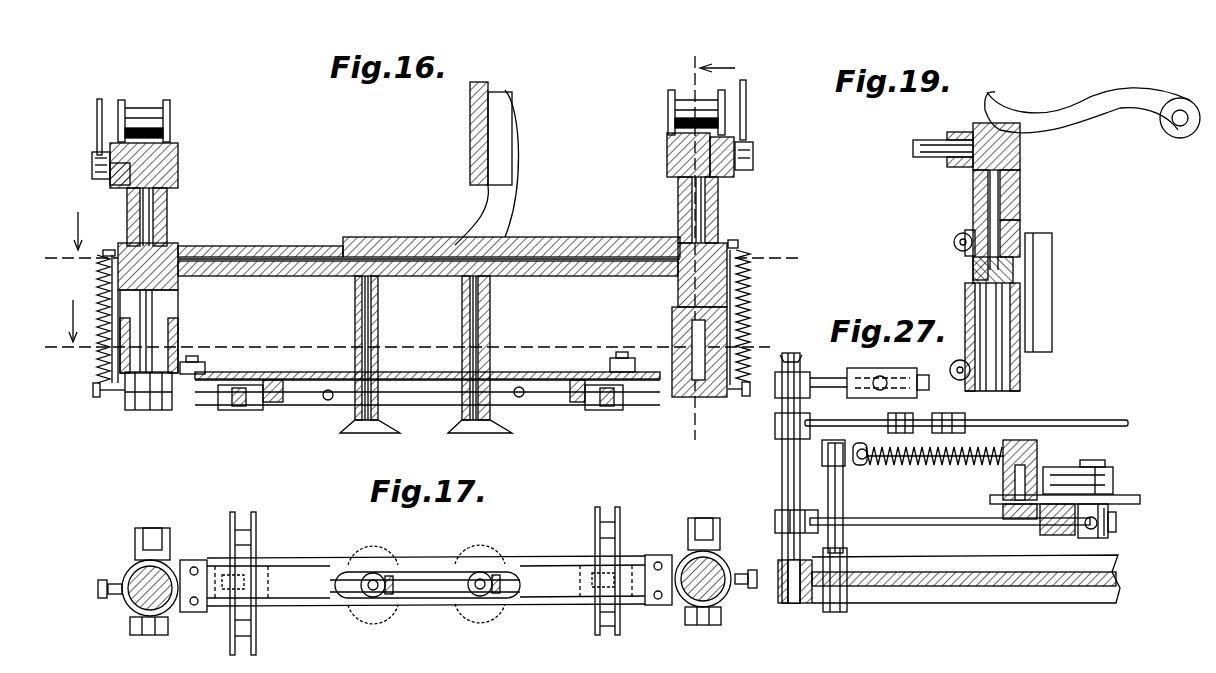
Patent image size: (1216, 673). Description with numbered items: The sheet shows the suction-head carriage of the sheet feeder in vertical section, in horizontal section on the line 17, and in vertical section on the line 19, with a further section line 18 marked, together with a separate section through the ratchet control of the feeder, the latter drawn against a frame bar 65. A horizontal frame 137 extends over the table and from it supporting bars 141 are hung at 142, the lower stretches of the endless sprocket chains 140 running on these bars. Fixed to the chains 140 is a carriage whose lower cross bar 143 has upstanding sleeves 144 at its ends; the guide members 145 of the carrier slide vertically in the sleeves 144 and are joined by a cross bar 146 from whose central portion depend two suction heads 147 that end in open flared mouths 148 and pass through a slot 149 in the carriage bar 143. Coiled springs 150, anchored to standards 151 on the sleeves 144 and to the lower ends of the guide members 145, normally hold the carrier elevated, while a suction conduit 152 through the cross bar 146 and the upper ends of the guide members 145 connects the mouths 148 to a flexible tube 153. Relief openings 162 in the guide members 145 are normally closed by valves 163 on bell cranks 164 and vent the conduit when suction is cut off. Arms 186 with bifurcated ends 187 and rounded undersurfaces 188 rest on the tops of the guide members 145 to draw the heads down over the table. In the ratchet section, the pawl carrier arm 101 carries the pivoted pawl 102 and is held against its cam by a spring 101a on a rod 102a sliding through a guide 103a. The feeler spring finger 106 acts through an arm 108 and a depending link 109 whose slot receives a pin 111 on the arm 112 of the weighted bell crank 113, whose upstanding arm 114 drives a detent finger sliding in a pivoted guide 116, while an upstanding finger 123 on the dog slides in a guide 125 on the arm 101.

In FIG. 16, the section line 17— 17 is at (417, 328).
In FIG. 16, the section line 18— 18 is at (418, 239).
In FIG. 16, the section line 19— 19 is at (710, 250).
In FIG. 27, the frame bar 65 is at (1108, 590).
In FIG. 27, the pawl carrier arm 101 is at (1112, 516).
In FIG. 27, the spring 101a is at (935, 466).
In FIG. 27, the pivoted pawl 102 is at (1112, 484).
In FIG. 27, the rod 102a is at (856, 466).
In FIG. 27, the guide 103a is at (1037, 446).
In FIG. 27, the feeler spring finger 106 is at (1045, 534).
In FIG. 27, the arm 108 is at (1066, 412).
In FIG. 27, the depending link 109 is at (927, 418).
In FIG. 27, the pin 111 is at (945, 428).
In FIG. 27, the arm of bell crank 112 is at (866, 408).
In FIG. 27, the weighted bell crank 113 is at (808, 514).
In FIG. 27, the upstanding arm 114 is at (780, 520).
In FIG. 27, the pivoted guide 116 is at (912, 528).
In FIG. 27, the upstanding finger 123 is at (1100, 538).
In FIG. 27, the guide 125 is at (1110, 526).
In FIG. 16, the horizontal frame 137 is at (470, 122).
In FIG. 16, the endless sprocket chains 140 is at (240, 386).
In FIG. 17, the endless sprocket chains 140 is at (256, 532).
In FIG. 16, the supporting bars 141 is at (238, 404).
In FIG. 16, the hangers 142 is at (468, 233).
In FIG. 16, the lower cross bar 143 is at (282, 370).
In FIG. 17, the lower cross bar 143 is at (308, 568).
In FIG. 16, the upstanding sleeves 144 is at (178, 332).
In FIG. 17, the upstanding sleeves 144 is at (170, 560).
In FIG. 19, the upstanding sleeves 144 is at (1052, 318).
In FIG. 16, the guide members 145 is at (180, 158).
In FIG. 17, the guide members 145 is at (175, 626).
In FIG. 19, the guide members 145 is at (1020, 156).
In FIG. 16, the cross bar 146 is at (552, 262).
In FIG. 19, the cross bar 146 is at (1020, 224).
In FIG. 16, the suction heads 147 is at (465, 310).
In FIG. 17, the suction heads 147 is at (366, 600).
In FIG. 16, the flared mouths 148 is at (356, 432).
In FIG. 17, the flared mouths 148 is at (456, 578).
In FIG. 16, the slot 149 is at (421, 370).
In FIG. 17, the slot 149 is at (436, 596).
In FIG. 16, the coiled springs 150 is at (97, 298).
In FIG. 17, the coiled springs 150 is at (106, 600).
In FIG. 16, the standards 151 is at (108, 250).
In FIG. 17, the standards 151 is at (122, 582).
In FIG. 16, the suction conduit 152 is at (315, 245).
In FIG. 19, the suction conduit 152 is at (960, 236).
In FIG. 19, the flexible tube 153 is at (928, 148).
In FIG. 16, the relief openings 162 is at (112, 184).
In FIG. 16, the valves 163 is at (95, 166).
In FIG. 16, the bell cranks 164 is at (97, 123).
In FIG. 16, the arms 186 is at (172, 122).
In FIG. 19, the arms 186 is at (1116, 106).
In FIG. 16, the bifurcated ends 187 is at (140, 112).
In FIG. 19, the rounded undersurfaces 188 is at (986, 100).